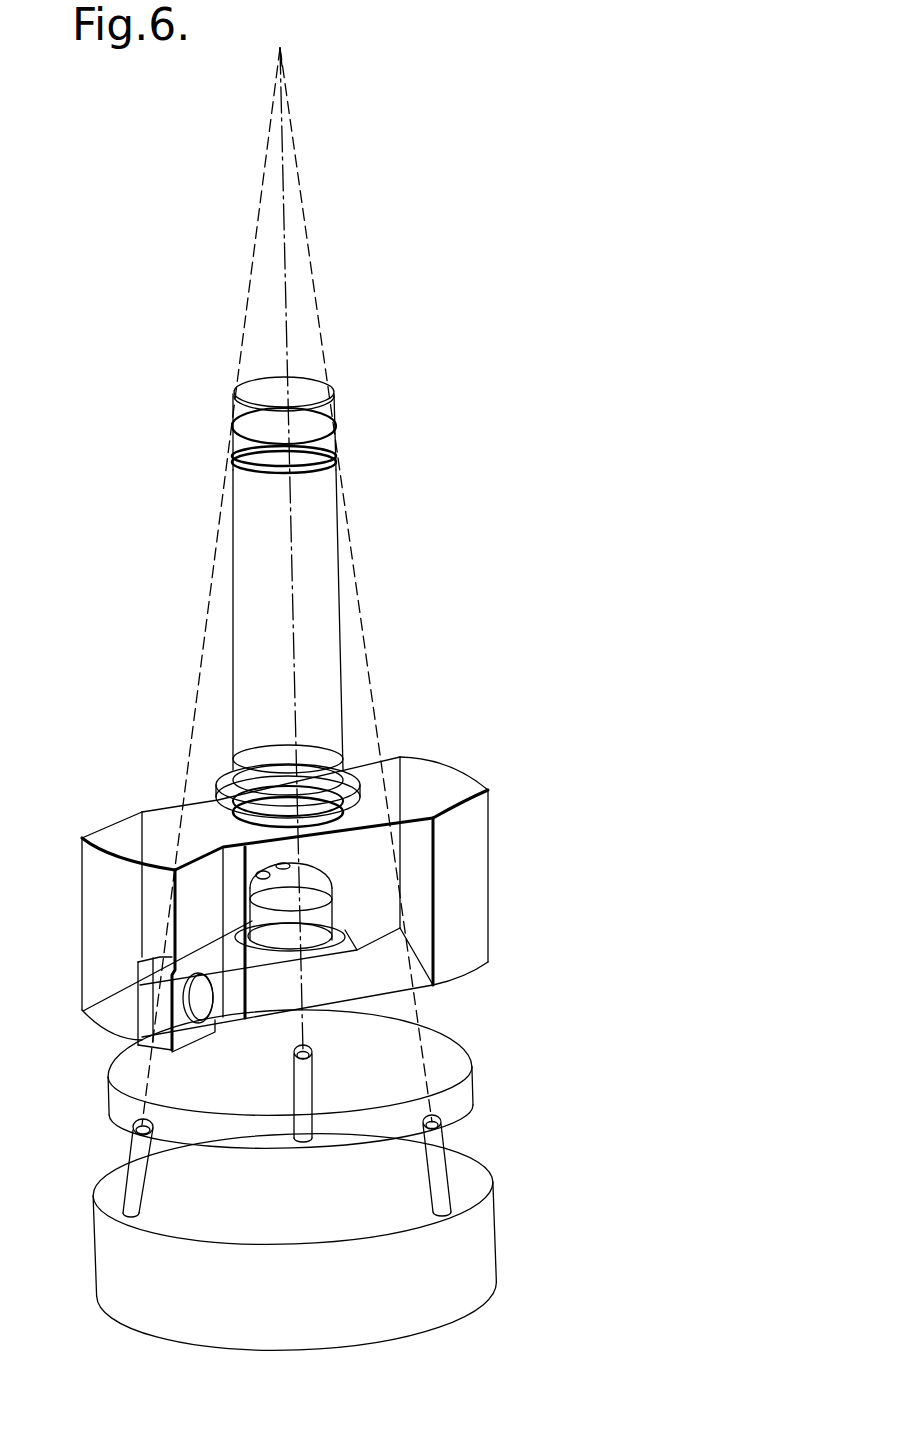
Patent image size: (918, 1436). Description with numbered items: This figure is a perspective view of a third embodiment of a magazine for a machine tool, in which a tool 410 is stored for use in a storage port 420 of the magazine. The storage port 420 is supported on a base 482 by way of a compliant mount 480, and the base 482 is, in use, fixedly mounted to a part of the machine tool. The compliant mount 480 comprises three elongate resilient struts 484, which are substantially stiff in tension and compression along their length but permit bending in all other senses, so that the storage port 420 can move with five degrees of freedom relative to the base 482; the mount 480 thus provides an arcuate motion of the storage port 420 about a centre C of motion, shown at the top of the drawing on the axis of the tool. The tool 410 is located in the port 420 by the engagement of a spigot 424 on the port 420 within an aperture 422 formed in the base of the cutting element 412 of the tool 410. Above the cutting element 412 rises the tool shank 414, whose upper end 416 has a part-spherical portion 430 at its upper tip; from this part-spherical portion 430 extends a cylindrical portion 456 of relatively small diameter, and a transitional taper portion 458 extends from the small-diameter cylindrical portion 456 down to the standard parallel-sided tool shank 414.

The centre of motion C is at (283, 60).
The tool 410 is at (293, 688).
The cutting element 412 is at (100, 908).
The tool shank 414 is at (243, 628).
The upper end of the tool shank 416 is at (310, 392).
The storage port 420 is at (455, 1053).
The aperture 422 is at (270, 865).
The spigot 424 is at (318, 905).
The part-spherical portion 430 is at (336, 410).
The cylindrical portion 456 is at (232, 441).
The transitional taper portion 458 is at (338, 460).
The compliant mount 480 is at (357, 1201).
The base 482 is at (480, 1253).
The elongate resilient struts 484 is at (146, 1176).